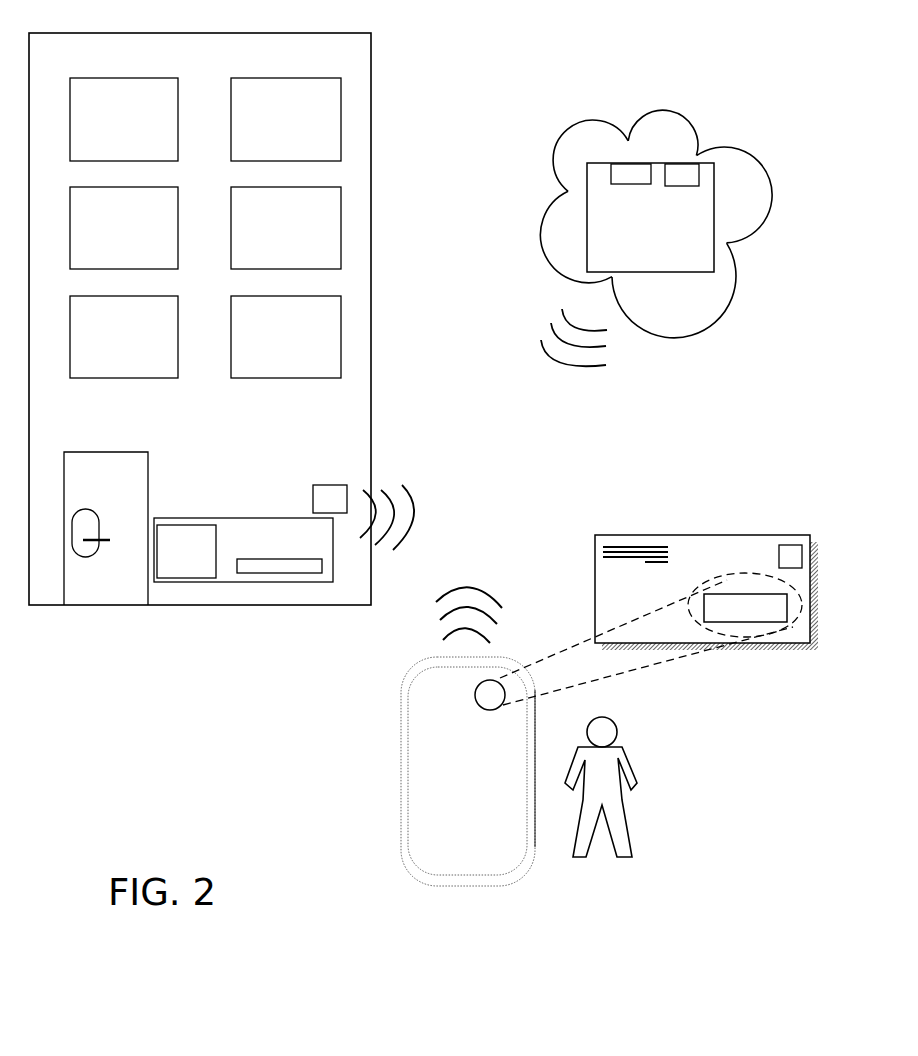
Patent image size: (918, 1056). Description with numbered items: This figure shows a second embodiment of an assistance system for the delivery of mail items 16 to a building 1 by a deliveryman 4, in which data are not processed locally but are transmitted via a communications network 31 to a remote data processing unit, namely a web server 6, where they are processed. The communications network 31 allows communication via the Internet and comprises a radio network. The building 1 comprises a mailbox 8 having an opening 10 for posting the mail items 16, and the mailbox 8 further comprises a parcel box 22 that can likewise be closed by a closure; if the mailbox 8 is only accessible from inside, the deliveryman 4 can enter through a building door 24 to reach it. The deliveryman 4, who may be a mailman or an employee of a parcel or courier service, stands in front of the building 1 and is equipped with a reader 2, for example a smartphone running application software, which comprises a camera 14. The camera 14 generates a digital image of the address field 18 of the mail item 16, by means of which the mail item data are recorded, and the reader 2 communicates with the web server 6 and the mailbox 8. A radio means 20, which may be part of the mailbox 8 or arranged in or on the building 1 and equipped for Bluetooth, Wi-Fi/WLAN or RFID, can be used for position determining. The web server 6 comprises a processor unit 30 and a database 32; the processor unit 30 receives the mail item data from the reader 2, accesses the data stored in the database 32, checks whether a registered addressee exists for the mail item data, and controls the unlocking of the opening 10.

The building 1 is at (358, 177).
The reader 2 is at (400, 738).
The deliveryman 4 is at (627, 750).
The web server 6 is at (587, 183).
The mailbox 8 is at (282, 580).
The opening 10 is at (247, 563).
The camera 14 is at (497, 681).
The mail item 16 is at (658, 536).
The address field 18 is at (745, 607).
The radio means 20 is at (348, 485).
The parcel box 22 is at (178, 570).
The building door 24 is at (85, 557).
The processor unit 30 is at (695, 172).
The communications network 31 is at (665, 337).
The database 32 is at (617, 172).